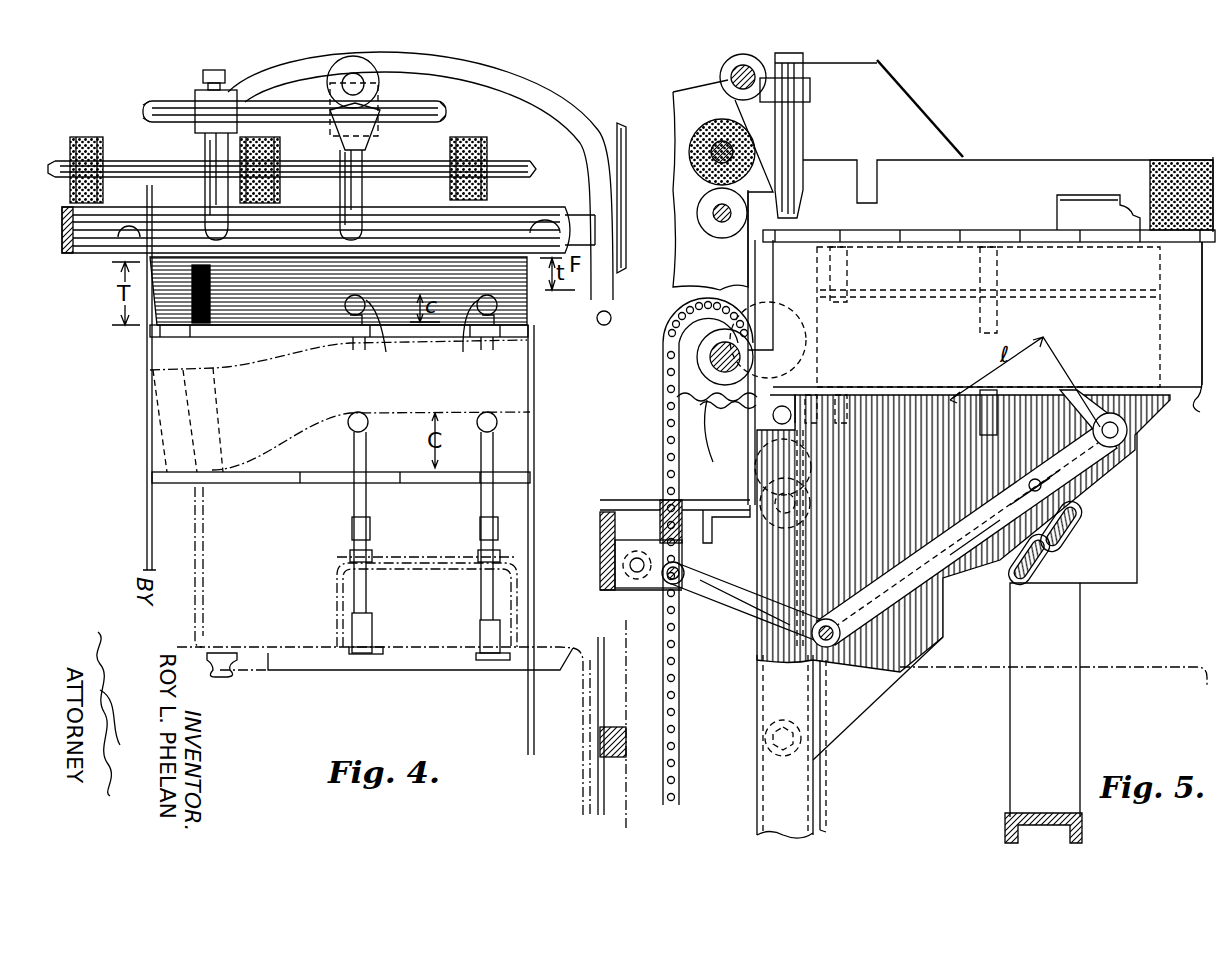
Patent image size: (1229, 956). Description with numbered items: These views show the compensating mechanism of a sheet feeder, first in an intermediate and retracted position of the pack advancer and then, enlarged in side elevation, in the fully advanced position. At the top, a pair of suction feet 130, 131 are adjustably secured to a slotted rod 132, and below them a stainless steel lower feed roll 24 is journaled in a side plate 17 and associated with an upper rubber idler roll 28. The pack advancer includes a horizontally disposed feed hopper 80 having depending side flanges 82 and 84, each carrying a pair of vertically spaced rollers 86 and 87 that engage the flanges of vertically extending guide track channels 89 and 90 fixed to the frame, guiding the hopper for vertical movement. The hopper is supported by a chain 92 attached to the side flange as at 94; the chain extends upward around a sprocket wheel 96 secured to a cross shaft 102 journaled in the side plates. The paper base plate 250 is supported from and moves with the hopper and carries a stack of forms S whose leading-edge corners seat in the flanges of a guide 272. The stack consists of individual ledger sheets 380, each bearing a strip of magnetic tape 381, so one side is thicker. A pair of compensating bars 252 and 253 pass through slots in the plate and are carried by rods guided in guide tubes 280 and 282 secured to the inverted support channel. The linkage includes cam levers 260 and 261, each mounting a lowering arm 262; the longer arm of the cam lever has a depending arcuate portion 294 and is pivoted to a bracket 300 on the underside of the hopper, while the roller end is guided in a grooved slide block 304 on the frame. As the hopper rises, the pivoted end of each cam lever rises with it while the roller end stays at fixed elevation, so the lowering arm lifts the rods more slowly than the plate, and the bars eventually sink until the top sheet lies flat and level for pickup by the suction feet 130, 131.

In FIG. 4, the side plate 17 is at (617, 127).
In FIG. 5, the side plate 17 is at (905, 88).
In FIG. 4, the lower feed roll 24 is at (72, 253).
In FIG. 5, the lower feed roll 24 is at (715, 233).
In FIG. 4, the upper feed rubber idler roll 28 is at (88, 137).
In FIG. 5, the upper feed rubber idler roll 28 is at (712, 130).
In FIG. 4, the feed hopper 80 is at (408, 672).
In FIG. 5, the feed hopper 80 is at (1200, 405).
In FIG. 5, the side flange 82 is at (872, 700).
In FIG. 5, the side flange 84 is at (930, 612).
In FIG. 5, the roller 86 is at (770, 520).
In FIG. 5, the roller 87 is at (778, 757).
In FIG. 5, the guide track channel 89 is at (762, 690).
In FIG. 4, the guide track channel 90 is at (610, 637).
In FIG. 5, the guide track channel 90 is at (760, 390).
In FIG. 5, the chain 92 is at (665, 438).
In FIG. 5, the chain attachment 94 is at (773, 420).
In FIG. 5, the sprocket wheel 96 is at (708, 425).
In FIG. 5, the cross shaft 102 is at (727, 350).
In FIG. 4, the suction foot 130 is at (203, 145).
In FIG. 5, the suction foot 130 is at (798, 208).
In FIG. 4, the suction foot 131 is at (368, 154).
In FIG. 4, the slotted rod 132 is at (157, 101).
In FIG. 5, the slotted rod 132 is at (733, 72).
In FIG. 4, the paper base plate 250 is at (522, 333).
In FIG. 5, the paper base plate 250 is at (1035, 232).
In FIG. 4, the compensating bar 252 is at (362, 410).
In FIG. 4, the compensating bar 253 is at (487, 410).
In FIG. 5, the cam lever 260 is at (762, 630).
In FIG. 5, the cam lever 261 is at (718, 605).
In FIG. 5, the lowering arm 262 is at (962, 602).
In FIG. 5, the guide 272 is at (780, 188).
In FIG. 5, the guide tube 280 is at (850, 270).
In FIG. 5, the guide tube 282 is at (1000, 310).
In FIG. 5, the depending arcuate portion 294 is at (1075, 566).
In FIG. 5, the bracket 300 is at (1095, 395).
In FIG. 5, the grooved slide block 304 is at (637, 590).
In FIG. 4, the ledger sheet 380 is at (178, 262).
In FIG. 4, the strip of magnetic tape 381 is at (205, 300).
In FIG. 4, the stack of forms S is at (157, 385).